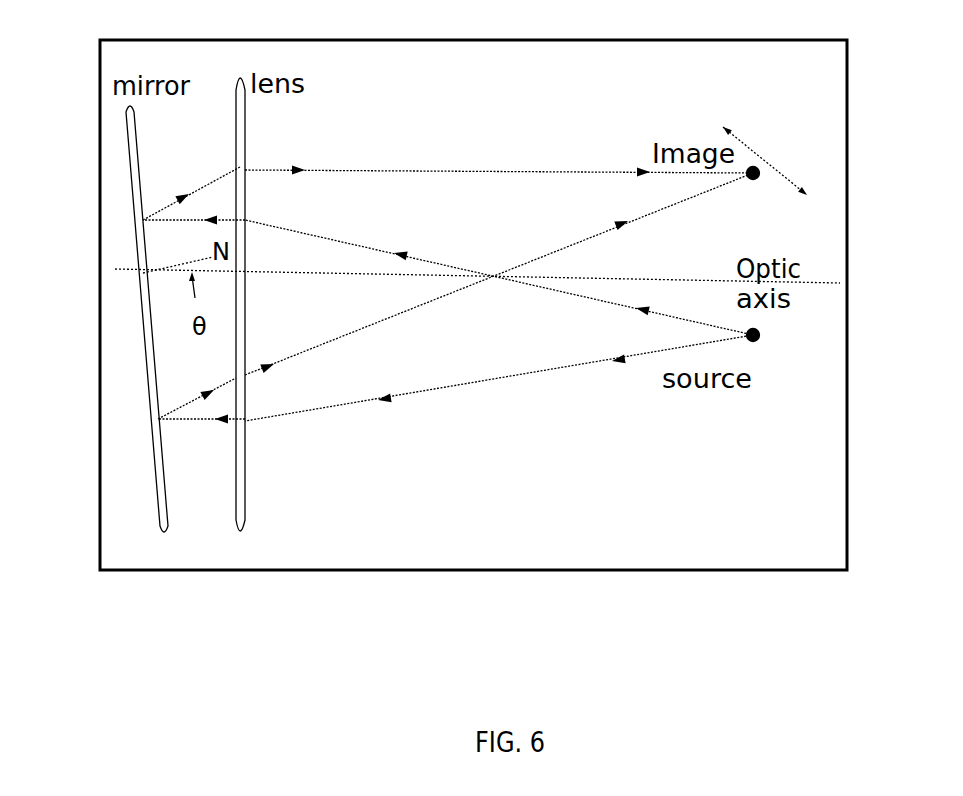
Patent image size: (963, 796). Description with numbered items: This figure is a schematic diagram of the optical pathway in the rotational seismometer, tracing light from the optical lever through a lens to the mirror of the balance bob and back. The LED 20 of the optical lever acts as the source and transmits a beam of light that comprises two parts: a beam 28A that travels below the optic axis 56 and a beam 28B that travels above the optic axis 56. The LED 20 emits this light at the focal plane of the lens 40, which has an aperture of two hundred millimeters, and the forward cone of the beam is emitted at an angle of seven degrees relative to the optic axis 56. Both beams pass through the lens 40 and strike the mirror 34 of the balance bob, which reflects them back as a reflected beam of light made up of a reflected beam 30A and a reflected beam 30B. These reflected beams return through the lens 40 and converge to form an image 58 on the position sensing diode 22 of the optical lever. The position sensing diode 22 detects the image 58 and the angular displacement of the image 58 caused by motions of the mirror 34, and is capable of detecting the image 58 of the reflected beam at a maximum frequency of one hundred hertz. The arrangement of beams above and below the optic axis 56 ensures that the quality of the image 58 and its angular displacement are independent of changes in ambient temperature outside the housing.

The LED 20 is at (793, 372).
The position sensing diode 22 is at (757, 145).
The beam 28A is at (455, 407).
The beam 28B is at (448, 288).
The reflected beam 30A is at (455, 296).
The reflected beam 30B is at (448, 170).
The mirror 34 is at (92, 315).
The lens 40 is at (318, 298).
The optic axis 56 is at (498, 304).
The image 58 is at (661, 122).